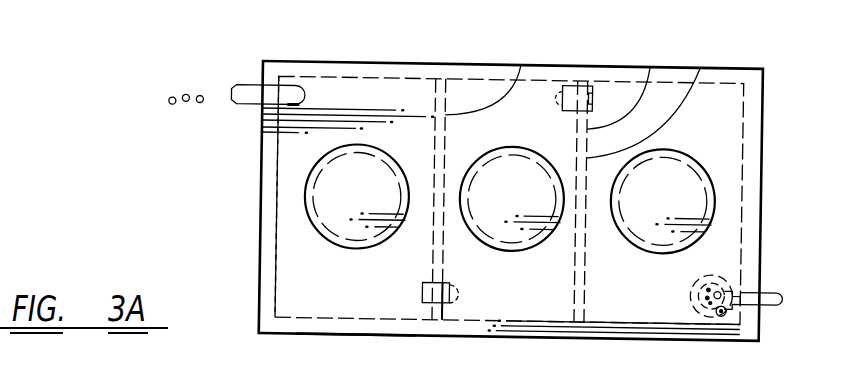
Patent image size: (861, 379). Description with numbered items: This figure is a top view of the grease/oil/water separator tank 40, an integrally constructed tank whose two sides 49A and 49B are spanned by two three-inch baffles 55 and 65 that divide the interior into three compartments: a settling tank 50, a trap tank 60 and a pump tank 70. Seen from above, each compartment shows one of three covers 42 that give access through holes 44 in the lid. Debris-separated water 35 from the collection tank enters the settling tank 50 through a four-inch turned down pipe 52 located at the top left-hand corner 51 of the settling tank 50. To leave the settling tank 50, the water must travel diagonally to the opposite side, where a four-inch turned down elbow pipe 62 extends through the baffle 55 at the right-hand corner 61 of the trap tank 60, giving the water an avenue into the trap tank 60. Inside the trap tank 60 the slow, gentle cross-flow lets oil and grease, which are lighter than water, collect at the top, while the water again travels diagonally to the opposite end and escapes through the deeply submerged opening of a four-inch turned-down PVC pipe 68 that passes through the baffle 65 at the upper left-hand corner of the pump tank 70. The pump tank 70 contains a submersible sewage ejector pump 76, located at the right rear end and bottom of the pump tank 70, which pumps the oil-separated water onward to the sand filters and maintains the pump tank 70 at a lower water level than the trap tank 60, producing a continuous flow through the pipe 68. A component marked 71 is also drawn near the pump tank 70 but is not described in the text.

The debris-separated water 35 is at (169, 101).
The grease/oil/water separator tank 40 is at (265, 287).
The covers 42 is at (325, 237).
The holes 44 is at (310, 215).
The side 49A is at (413, 59).
The side 49B is at (356, 333).
The settling tank 50 is at (390, 286).
The top left-hand corner 51 is at (278, 148).
The turned down pipe 52 is at (257, 85).
The baffle 55 is at (521, 61).
The trap tank 60 is at (560, 303).
The right-hand corner 61 is at (451, 317).
The turned down elbow pipe 62 is at (471, 297).
The baffle 65 is at (700, 62).
The turned-down PVC pipe 68 is at (563, 82).
The pump tank 70 is at (660, 300).
The inner curved passage 71 is at (650, 62).
The submersible sewage ejector pump 76 is at (711, 306).